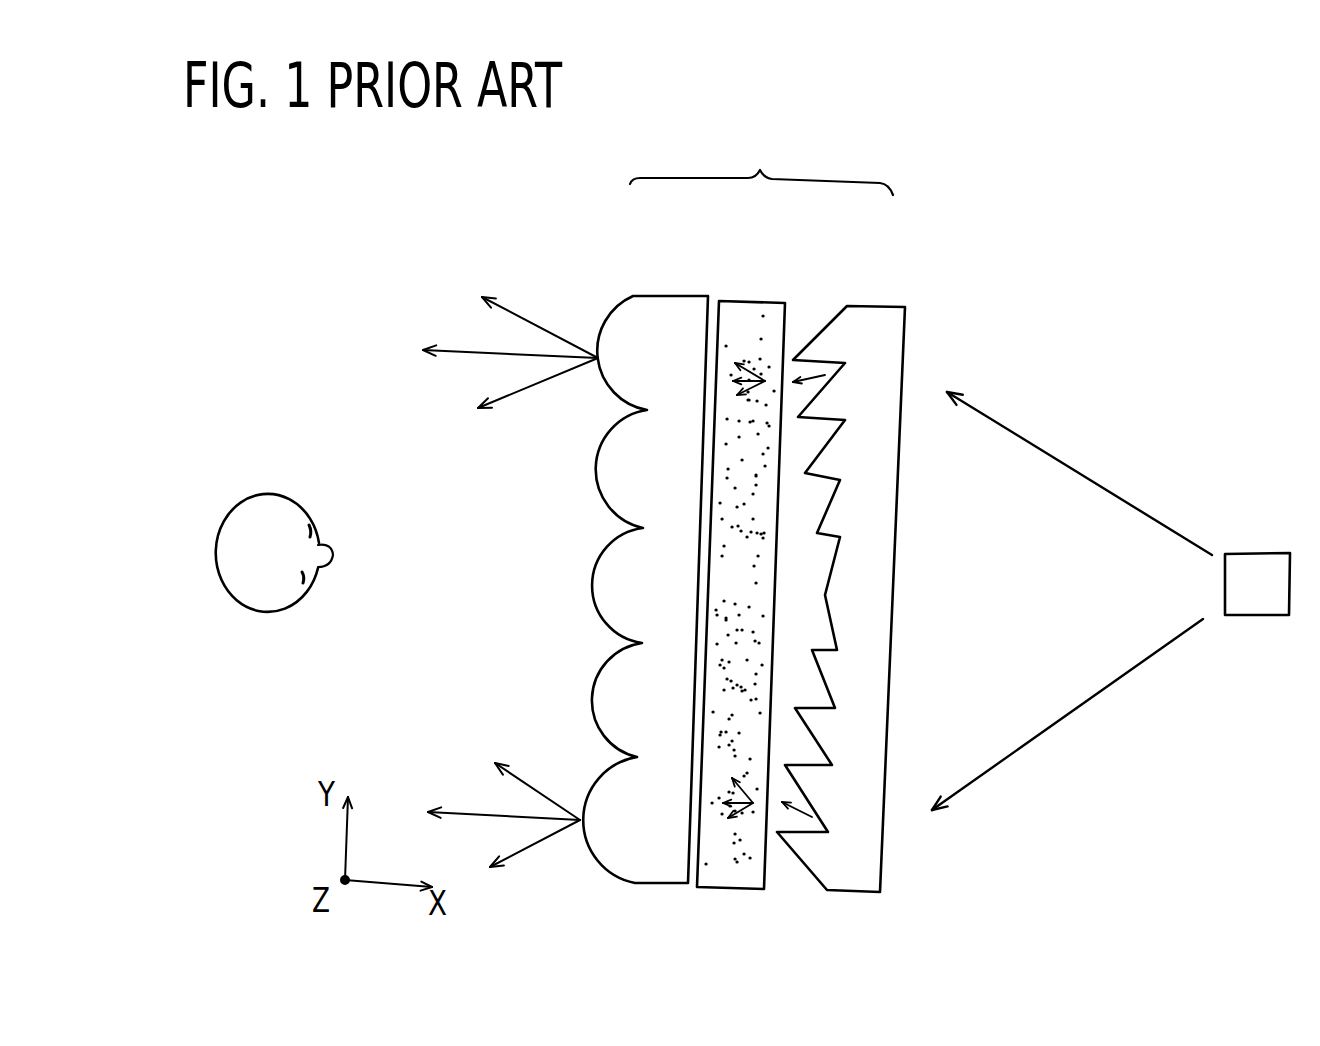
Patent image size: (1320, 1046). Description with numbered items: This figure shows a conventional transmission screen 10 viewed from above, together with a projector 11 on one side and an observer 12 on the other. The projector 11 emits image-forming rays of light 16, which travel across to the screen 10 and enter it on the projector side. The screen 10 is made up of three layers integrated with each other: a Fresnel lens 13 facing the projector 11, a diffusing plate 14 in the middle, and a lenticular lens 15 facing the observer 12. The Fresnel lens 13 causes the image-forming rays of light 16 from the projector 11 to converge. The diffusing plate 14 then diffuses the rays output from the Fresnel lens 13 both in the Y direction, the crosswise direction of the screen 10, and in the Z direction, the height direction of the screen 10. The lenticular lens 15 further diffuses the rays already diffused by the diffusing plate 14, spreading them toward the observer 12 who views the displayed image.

The transmission screen 10 is at (761, 160).
The projector 11 is at (1275, 617).
The observer 12 is at (267, 612).
The Fresnel lens 13 is at (873, 307).
The diffusing plate 14 is at (758, 298).
The lenticular lens 15 is at (662, 293).
The image-forming rays of light 16 is at (1067, 462).